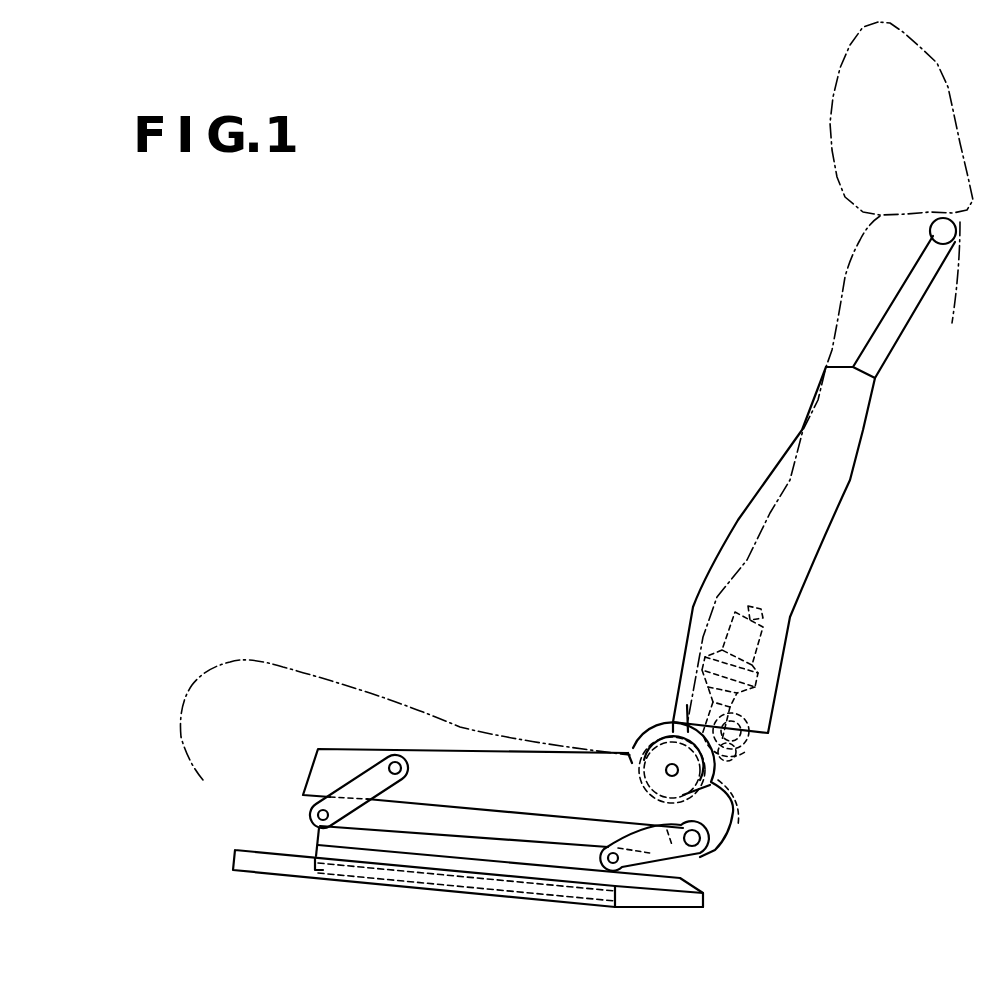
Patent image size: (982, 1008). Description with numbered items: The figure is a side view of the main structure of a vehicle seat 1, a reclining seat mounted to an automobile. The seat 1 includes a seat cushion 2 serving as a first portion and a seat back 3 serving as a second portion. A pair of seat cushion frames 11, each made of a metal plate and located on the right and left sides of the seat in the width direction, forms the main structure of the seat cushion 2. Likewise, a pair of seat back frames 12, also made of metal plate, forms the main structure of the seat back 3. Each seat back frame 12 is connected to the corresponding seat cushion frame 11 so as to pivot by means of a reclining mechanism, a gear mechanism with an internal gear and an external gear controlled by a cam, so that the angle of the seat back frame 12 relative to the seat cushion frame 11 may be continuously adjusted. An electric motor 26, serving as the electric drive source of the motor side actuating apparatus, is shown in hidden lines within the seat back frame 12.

The vehicle seat 1 is at (594, 519).
The seat cushion 2 is at (378, 695).
The seat back 3 is at (843, 283).
The seat cushion frame 11 is at (338, 757).
The seat back frame 12 is at (740, 523).
The electric motor 26 is at (757, 643).